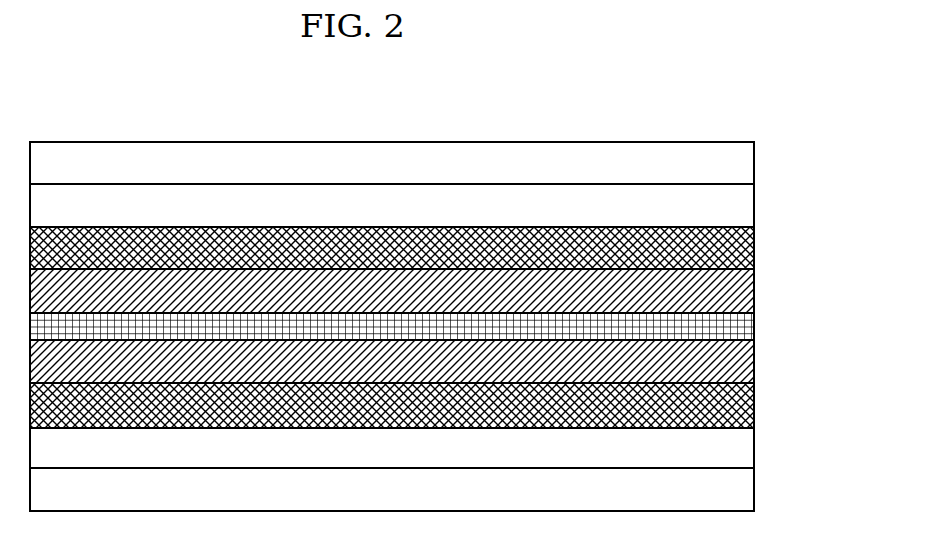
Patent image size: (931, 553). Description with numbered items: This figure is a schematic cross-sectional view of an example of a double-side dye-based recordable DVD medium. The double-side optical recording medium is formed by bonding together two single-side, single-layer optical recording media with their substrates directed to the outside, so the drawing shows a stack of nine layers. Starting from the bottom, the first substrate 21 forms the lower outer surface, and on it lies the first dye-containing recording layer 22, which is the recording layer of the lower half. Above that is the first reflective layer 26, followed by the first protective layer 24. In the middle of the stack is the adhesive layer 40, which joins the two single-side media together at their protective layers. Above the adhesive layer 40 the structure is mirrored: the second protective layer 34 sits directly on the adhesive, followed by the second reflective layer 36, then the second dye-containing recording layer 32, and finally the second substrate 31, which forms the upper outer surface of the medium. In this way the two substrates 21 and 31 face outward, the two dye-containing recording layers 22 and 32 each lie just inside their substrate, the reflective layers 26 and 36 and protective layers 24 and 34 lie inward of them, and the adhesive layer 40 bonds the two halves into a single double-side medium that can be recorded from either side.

The second substrate 31 is at (754, 166).
The second dye-containing recording layer 32 is at (754, 206).
The second reflective layer 36 is at (754, 245).
The second protective layer 34 is at (754, 290).
The adhesive layer 40 is at (754, 323).
The first protective layer 24 is at (754, 359).
The first reflective layer 26 is at (754, 403).
The first dye-containing recording layer 22 is at (754, 447).
The first substrate 21 is at (754, 492).